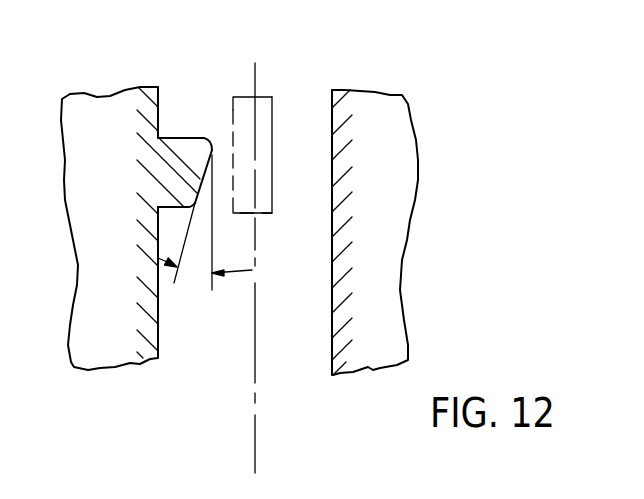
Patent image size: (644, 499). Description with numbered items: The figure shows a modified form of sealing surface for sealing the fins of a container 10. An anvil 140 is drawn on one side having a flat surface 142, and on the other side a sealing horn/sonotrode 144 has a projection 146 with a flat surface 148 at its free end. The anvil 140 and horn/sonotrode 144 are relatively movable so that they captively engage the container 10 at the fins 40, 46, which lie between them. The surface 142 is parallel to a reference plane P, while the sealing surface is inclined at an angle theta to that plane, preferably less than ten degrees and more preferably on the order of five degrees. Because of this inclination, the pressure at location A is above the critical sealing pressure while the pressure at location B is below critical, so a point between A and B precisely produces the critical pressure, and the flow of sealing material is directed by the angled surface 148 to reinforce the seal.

The container 10 is at (274, 164).
The fin 40 is at (245, 110).
The fin 46 is at (263, 113).
The anvil 140 is at (390, 218).
The flat surface 142 is at (332, 150).
The sealing horn/sonotrode 144 is at (93, 103).
The projection 146 is at (175, 138).
The flat surface 148 is at (199, 178).